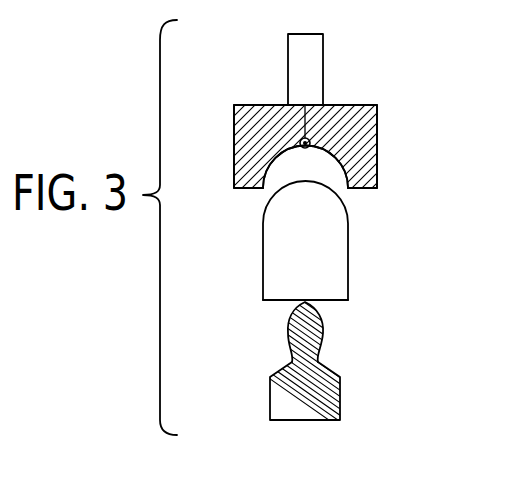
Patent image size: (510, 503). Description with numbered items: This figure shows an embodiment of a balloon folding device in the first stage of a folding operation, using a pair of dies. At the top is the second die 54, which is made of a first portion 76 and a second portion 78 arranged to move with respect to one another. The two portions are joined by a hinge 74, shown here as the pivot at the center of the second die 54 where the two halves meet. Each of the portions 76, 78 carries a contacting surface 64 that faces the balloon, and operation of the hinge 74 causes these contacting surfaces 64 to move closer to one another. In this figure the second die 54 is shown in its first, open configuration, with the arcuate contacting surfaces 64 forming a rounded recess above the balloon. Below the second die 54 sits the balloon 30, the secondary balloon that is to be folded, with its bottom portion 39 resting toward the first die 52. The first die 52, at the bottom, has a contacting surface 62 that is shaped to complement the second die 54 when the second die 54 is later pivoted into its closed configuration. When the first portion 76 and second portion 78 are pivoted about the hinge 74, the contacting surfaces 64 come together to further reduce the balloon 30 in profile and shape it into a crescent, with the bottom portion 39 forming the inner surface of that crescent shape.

The balloon 30 is at (348, 264).
The bottom portion 39 is at (270, 302).
The first die 52 is at (270, 408).
The second die 54 is at (355, 105).
The contacting surface 62 is at (323, 336).
The contacting surfaces 64 is at (268, 163).
The hinge 74 is at (302, 139).
The first portion 76 is at (377, 155).
The second portion 78 is at (234, 138).